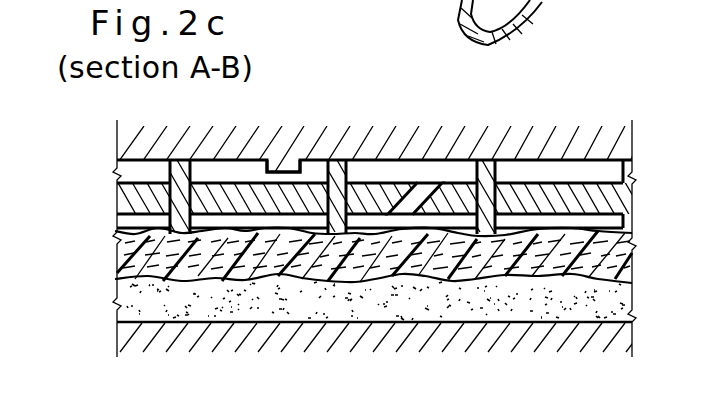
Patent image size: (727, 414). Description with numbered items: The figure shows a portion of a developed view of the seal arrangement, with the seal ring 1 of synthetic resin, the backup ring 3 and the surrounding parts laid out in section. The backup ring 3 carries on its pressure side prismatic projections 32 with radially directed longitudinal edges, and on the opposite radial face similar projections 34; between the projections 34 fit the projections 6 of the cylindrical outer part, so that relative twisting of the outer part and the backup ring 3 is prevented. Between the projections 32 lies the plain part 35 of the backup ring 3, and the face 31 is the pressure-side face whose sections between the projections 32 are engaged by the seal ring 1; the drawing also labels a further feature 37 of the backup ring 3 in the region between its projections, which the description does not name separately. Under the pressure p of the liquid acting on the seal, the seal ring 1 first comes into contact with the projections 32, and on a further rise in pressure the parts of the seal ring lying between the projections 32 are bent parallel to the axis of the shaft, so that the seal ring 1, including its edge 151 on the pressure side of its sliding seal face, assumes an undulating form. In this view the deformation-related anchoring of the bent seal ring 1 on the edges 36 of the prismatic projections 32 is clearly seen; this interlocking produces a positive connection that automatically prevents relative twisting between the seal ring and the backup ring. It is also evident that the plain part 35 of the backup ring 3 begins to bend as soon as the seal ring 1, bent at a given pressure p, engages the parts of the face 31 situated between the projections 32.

The seal ring 1 is at (118, 276).
The backup ring 3 is at (499, 207).
The projections 6 is at (283, 167).
The face 31 is at (570, 215).
The projections 32 is at (337, 230).
The projections 34 is at (483, 180).
The plain part 35 is at (243, 197).
The edges 36 is at (182, 237).
The inclined channel 37 is at (421, 200).
The edge 151 is at (259, 260).
The pressure p is at (585, 305).